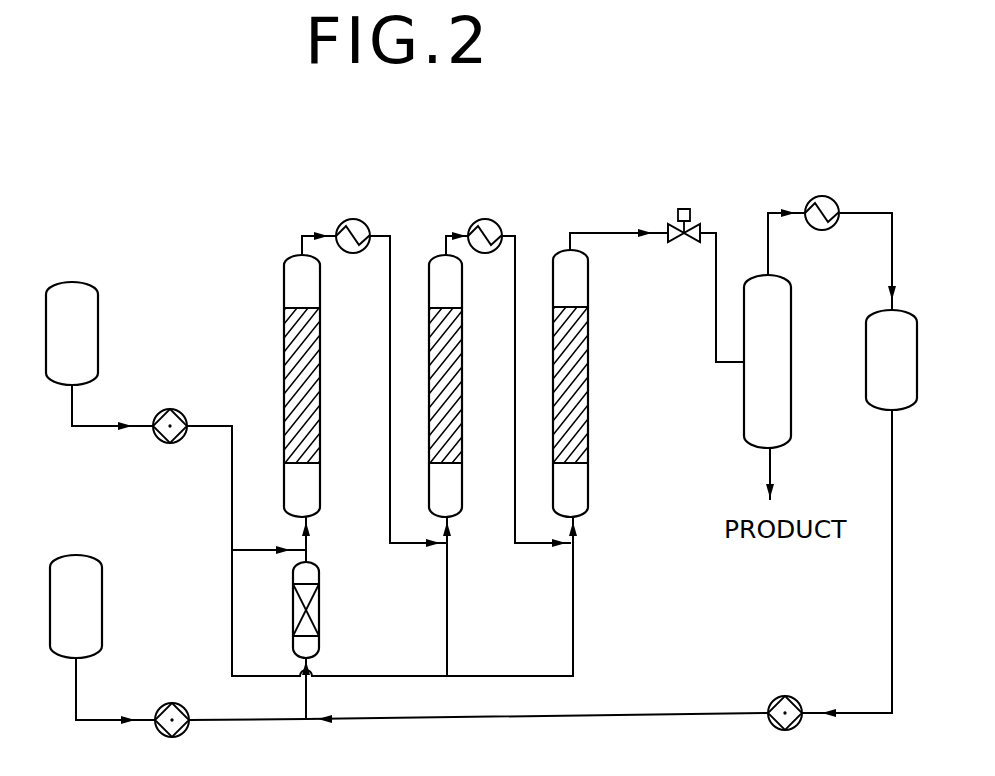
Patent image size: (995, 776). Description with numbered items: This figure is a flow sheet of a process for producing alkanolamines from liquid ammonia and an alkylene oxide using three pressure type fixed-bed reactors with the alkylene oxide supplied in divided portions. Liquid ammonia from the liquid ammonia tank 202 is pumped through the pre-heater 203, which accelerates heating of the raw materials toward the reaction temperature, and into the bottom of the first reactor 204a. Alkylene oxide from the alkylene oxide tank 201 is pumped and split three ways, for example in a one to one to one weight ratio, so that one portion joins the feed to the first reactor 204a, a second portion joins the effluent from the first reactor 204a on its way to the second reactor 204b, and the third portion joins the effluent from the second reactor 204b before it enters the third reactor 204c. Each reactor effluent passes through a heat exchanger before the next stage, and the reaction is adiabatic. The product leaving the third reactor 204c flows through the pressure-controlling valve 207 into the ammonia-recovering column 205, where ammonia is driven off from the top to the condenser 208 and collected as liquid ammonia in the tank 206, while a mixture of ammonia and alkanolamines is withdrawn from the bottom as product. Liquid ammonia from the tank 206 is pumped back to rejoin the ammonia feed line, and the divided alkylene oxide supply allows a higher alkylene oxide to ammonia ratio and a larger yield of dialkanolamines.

The alkylene oxide tank 201 is at (75, 282).
The liquid ammonia tank 202 is at (77, 555).
The pre-heater 203 is at (320, 599).
The first reactor 204a is at (284, 348).
The second reactor 204b is at (434, 258).
The third reactor 204c is at (560, 254).
The ammonia-recovering column 205 is at (744, 393).
The tank 206 is at (866, 370).
The pressure-controlling valve 207 is at (684, 209).
The condenser 208 is at (821, 195).